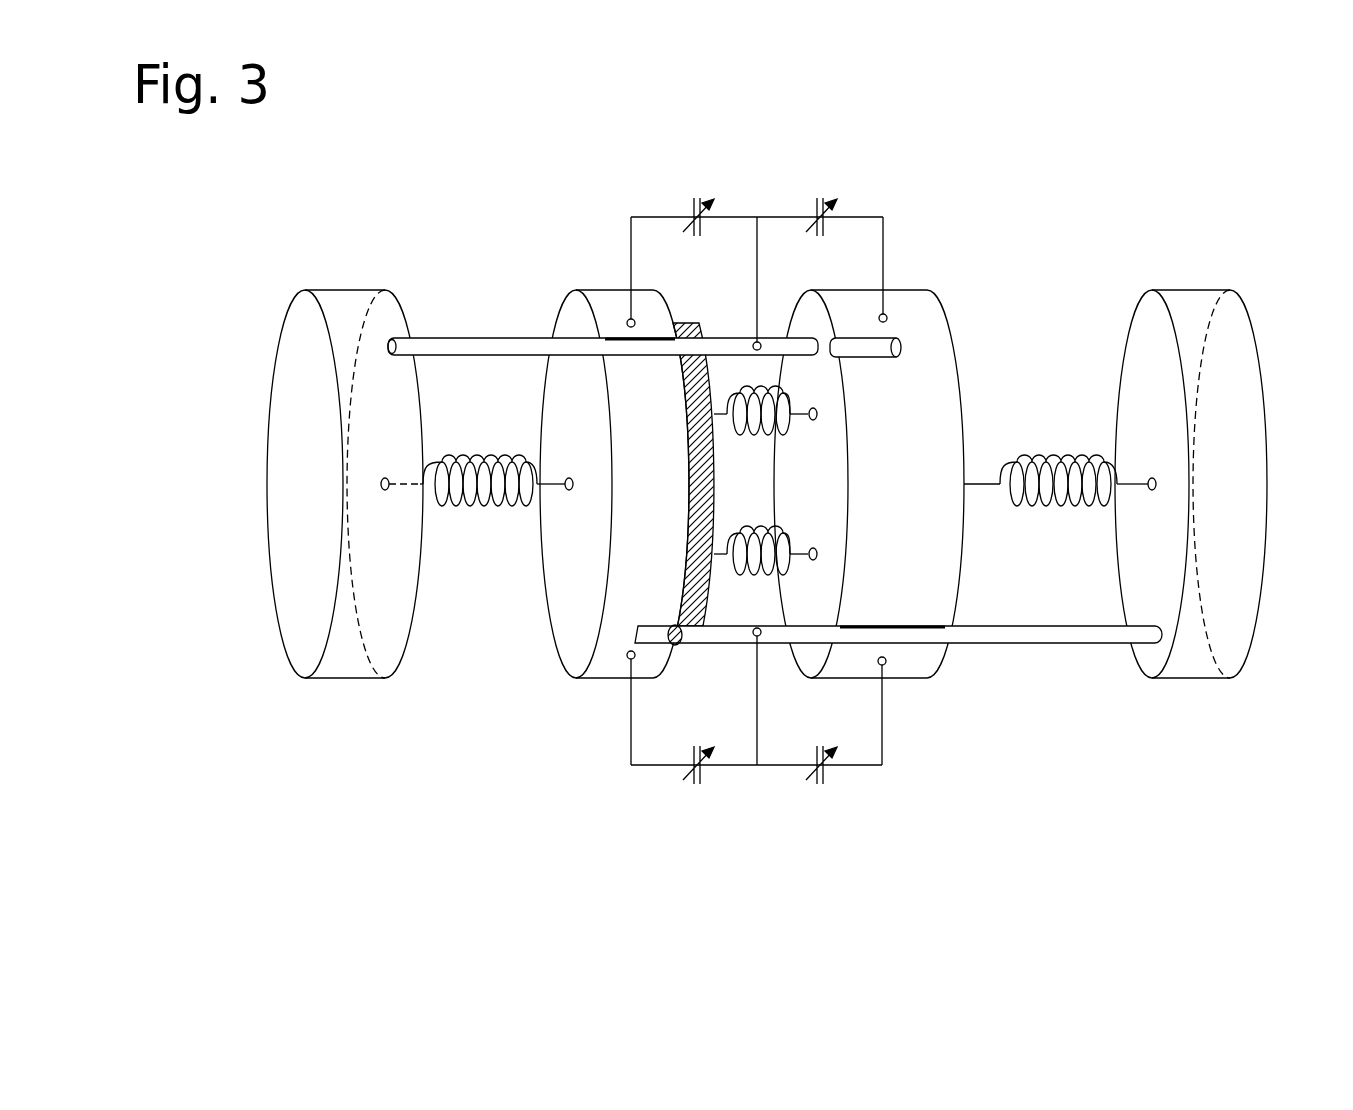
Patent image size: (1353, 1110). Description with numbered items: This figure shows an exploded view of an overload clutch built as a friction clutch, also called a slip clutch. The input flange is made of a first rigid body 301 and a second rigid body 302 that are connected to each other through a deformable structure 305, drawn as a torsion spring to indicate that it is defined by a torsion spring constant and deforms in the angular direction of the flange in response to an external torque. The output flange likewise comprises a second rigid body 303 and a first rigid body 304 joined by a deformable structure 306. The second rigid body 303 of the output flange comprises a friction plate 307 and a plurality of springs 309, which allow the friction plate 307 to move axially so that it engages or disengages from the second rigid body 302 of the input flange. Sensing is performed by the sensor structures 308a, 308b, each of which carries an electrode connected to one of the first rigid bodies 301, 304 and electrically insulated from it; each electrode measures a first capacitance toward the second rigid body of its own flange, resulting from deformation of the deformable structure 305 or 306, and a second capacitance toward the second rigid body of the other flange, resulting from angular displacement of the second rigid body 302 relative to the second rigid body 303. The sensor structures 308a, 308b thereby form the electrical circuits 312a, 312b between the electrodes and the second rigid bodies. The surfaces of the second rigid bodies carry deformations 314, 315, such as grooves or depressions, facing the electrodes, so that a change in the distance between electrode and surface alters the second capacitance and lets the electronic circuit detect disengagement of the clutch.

The first rigid body 301 is at (341, 656).
The second rigid body 302 is at (610, 662).
The second rigid body 303 is at (902, 658).
The first rigid body 304 is at (1187, 650).
The deformable structure 305 is at (450, 503).
The deformable structure 306 is at (1037, 462).
The friction plate 307 is at (708, 500).
The first sensor structure 308a is at (440, 348).
The sensor structure 308b is at (1033, 637).
The plurality of springs 309 is at (802, 413).
The first electrical circuit 312a is at (757, 200).
The electrical circuit 312b is at (740, 790).
The deformation 314 is at (648, 640).
The deformation 315 is at (885, 343).